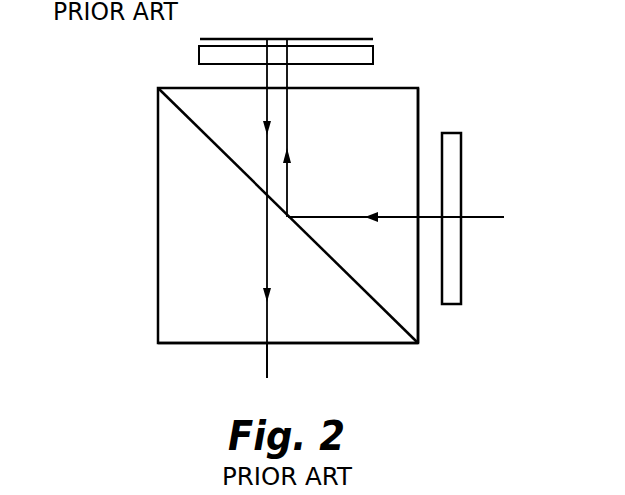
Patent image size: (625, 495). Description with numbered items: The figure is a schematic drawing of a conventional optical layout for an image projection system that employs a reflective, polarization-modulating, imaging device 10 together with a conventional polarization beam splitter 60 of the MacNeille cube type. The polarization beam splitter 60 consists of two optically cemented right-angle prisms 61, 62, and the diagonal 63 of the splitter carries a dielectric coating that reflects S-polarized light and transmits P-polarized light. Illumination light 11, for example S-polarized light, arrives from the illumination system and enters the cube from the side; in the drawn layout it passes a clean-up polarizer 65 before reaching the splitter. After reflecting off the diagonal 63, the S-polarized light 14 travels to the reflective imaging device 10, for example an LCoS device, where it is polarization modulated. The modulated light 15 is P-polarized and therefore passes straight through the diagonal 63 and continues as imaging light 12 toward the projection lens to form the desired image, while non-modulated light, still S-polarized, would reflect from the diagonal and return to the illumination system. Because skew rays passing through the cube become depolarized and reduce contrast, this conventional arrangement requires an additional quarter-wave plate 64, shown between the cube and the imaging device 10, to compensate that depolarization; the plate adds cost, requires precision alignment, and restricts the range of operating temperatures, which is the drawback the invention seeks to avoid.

The reflective, polarization-modulating, imaging device 10 is at (354, 39).
The illumination light 11 is at (488, 217).
The imaging light 12 is at (268, 370).
The S-polarized light 14 is at (330, 213).
The modulated light 15 is at (267, 247).
The polarization beam splitter 60 is at (137, 310).
The right-angle prism 61 is at (220, 325).
The right-angle prism 62 is at (411, 112).
The diagonal 63 is at (195, 125).
The quarter-wave plate 64 is at (368, 53).
The clean-up polarizer 65 is at (450, 282).